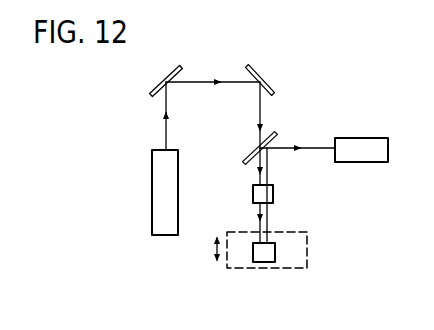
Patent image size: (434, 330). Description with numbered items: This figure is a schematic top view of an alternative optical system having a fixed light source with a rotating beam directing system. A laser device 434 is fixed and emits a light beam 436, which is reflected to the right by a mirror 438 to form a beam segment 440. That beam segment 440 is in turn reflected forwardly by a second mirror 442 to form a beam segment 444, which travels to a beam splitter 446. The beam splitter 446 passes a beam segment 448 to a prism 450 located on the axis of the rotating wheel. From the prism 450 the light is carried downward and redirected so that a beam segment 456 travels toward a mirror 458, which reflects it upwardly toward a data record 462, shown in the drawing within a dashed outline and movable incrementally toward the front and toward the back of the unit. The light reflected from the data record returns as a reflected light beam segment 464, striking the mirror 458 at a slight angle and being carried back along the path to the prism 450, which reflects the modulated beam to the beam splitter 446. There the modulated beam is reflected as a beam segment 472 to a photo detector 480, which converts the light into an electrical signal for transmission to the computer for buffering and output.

The laser device 434 is at (152, 155).
The light beam 436 is at (165, 132).
The mirror 438 is at (171, 67).
The beam segment 440 is at (232, 81).
The mirror 442 is at (273, 73).
The beam segment 444 is at (259, 113).
The beam splitter 446 is at (268, 131).
The beam segment 448 is at (248, 166).
The prism 450 is at (253, 194).
The beam segment 456 is at (261, 226).
The mirror 458 is at (263, 258).
The data record 462 is at (233, 269).
The reflected light beam segment 464 is at (267, 180).
The beam segment 472 is at (328, 150).
The photo detector 480 is at (363, 138).